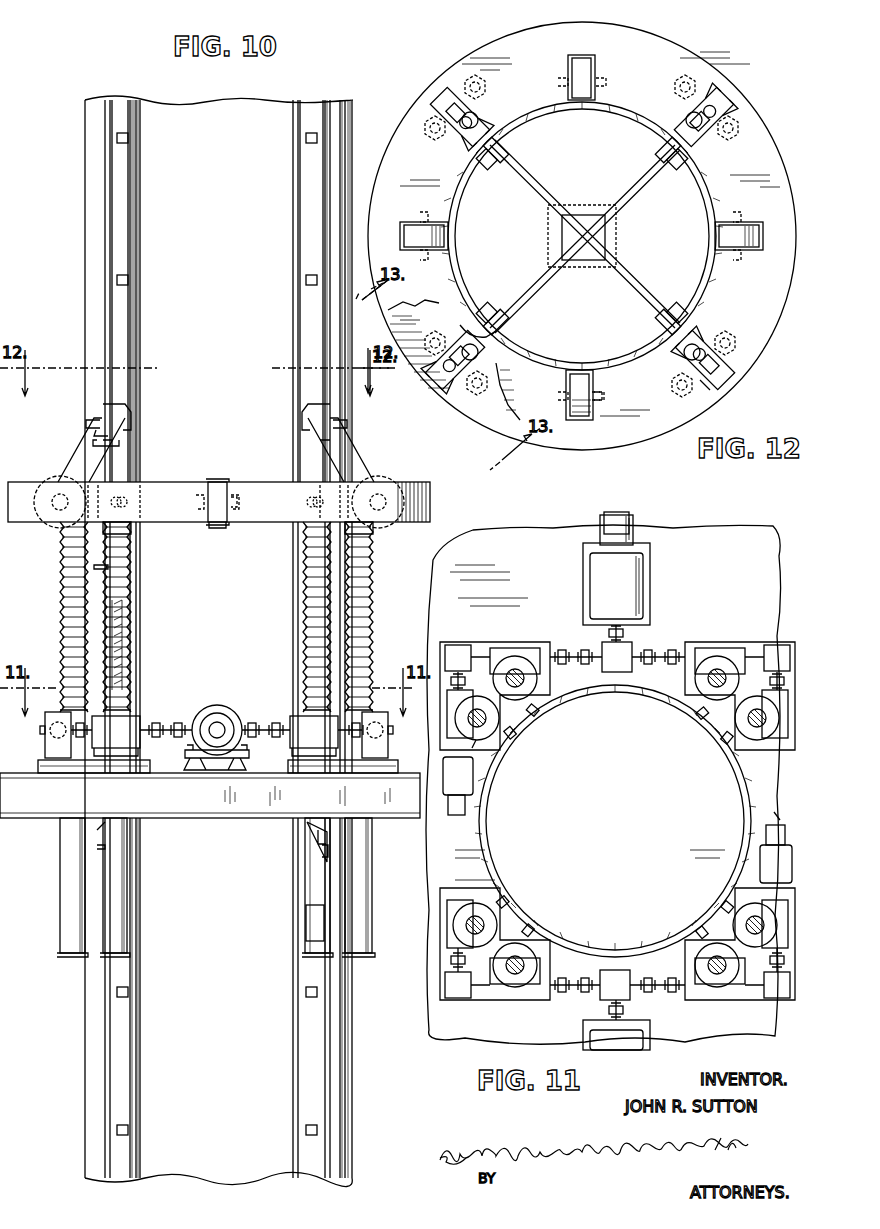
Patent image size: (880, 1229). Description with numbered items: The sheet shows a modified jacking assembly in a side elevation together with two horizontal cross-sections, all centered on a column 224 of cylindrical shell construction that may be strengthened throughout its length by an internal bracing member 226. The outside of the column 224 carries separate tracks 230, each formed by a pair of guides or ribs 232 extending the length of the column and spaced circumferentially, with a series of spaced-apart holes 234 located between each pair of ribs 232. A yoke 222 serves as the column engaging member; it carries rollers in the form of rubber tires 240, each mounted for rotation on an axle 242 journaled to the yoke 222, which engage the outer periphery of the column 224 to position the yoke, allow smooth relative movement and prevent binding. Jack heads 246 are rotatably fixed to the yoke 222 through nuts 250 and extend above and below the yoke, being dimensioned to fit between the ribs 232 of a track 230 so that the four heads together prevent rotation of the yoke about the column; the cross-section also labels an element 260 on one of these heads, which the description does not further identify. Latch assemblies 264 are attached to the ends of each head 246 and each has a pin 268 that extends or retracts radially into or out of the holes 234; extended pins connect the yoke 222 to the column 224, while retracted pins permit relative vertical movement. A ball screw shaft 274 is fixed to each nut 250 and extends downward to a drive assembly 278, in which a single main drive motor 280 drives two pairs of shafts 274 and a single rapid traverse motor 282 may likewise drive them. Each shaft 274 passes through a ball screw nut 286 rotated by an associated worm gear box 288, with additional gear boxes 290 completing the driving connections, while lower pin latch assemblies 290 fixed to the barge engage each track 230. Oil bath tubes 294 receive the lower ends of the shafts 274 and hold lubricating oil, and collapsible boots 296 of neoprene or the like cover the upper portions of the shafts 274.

In FIG. 10, the yoke 222 is at (414, 482).
In FIG. 12, the yoke 222 is at (676, 50).
In FIG. 10, the column 224 is at (193, 120).
In FIG. 12, the column 224 is at (454, 204).
In FIG. 11, the column 224 is at (735, 798).
In FIG. 12, the internal bracing member 226 is at (607, 194).
In FIG. 10, the track 230 is at (144, 206).
In FIG. 11, the track 230 is at (530, 733).
In FIG. 10, the ribs 232 is at (104, 326).
In FIG. 11, the ribs 232 is at (508, 754).
In FIG. 10, the holes 234 is at (128, 281).
In FIG. 10, the rollers 240 is at (220, 481).
In FIG. 12, the rollers 240 is at (580, 60).
In FIG. 10, the axle 242 is at (236, 492).
In FIG. 12, the axle 242 is at (600, 394).
In FIG. 10, the jack heads 246 is at (96, 476).
In FIG. 12, the jack heads 246 is at (458, 92).
In FIG. 12, the nuts 250 is at (710, 400).
In FIG. 12, the clamp shoe 260 is at (478, 314).
In FIG. 10, the latch assembly 264 is at (125, 418).
In FIG. 12, the latch assembly 264 is at (472, 108).
In FIG. 12, the pin 268 is at (492, 140).
In FIG. 10, the ball screw shaft 274 is at (60, 583).
In FIG. 11, the ball screw shaft 274 is at (529, 690).
In FIG. 10, the drive assembly 278 is at (147, 720).
In FIG. 11, the drive assembly 278 is at (480, 635).
In FIG. 10, the main drive motor 280 is at (231, 722).
In FIG. 11, the main drive motor 280 is at (624, 588).
In FIG. 11, the rapid traverse motor 282 is at (452, 792).
In FIG. 11, the ball screw nut 286 is at (504, 664).
In FIG. 11, the worm gear box 288 is at (516, 654).
In FIG. 10, the gear boxes / lower pin latch assemblies 290 is at (289, 842).
In FIG. 11, the gear boxes / lower pin latch assemblies 290 is at (605, 1000).
In FIG. 10, the oil bath tubes 294 is at (62, 878).
In FIG. 10, the collapsible boots 296 is at (121, 578).